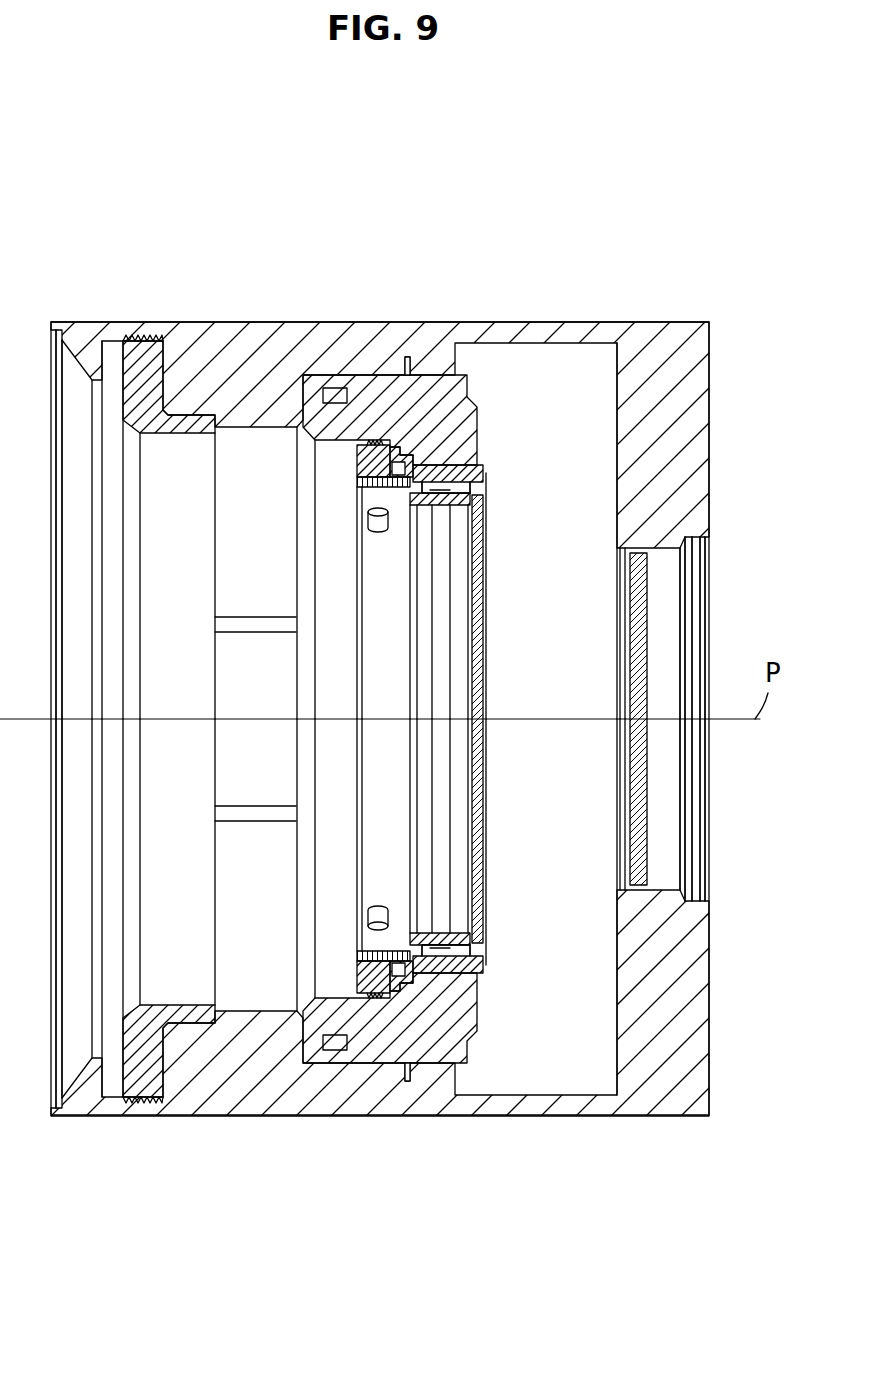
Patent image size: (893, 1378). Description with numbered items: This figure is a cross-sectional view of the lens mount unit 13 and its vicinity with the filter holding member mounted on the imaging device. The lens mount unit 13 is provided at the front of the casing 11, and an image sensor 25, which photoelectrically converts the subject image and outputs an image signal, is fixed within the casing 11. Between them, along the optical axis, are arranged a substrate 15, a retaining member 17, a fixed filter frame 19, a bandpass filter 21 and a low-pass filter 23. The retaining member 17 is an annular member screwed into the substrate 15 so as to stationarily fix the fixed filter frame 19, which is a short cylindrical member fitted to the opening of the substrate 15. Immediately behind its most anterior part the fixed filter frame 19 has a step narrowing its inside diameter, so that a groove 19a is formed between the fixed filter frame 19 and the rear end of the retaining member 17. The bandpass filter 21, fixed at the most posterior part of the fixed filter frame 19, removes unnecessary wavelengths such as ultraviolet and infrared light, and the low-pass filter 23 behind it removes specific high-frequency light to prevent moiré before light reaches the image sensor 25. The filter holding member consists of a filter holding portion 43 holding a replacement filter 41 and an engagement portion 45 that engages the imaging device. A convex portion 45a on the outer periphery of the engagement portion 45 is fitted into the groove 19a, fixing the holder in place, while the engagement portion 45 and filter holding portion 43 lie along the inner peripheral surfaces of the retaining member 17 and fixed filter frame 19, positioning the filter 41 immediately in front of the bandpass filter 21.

The casing 11 is at (96, 1098).
The lens mount unit 13 is at (150, 1075).
The substrate 15 is at (318, 1066).
The retaining member 17 is at (378, 997).
The fixed filter frame 19 is at (430, 946).
The groove 19a is at (395, 470).
The bandpass filter 21 is at (490, 945).
The low-pass filter 23 is at (640, 886).
The image sensor 25 is at (702, 902).
The filter 41 is at (487, 507).
The filter holding portion 43 is at (462, 468).
The engagement portion 45 is at (415, 462).
The convex portion 45a is at (388, 490).